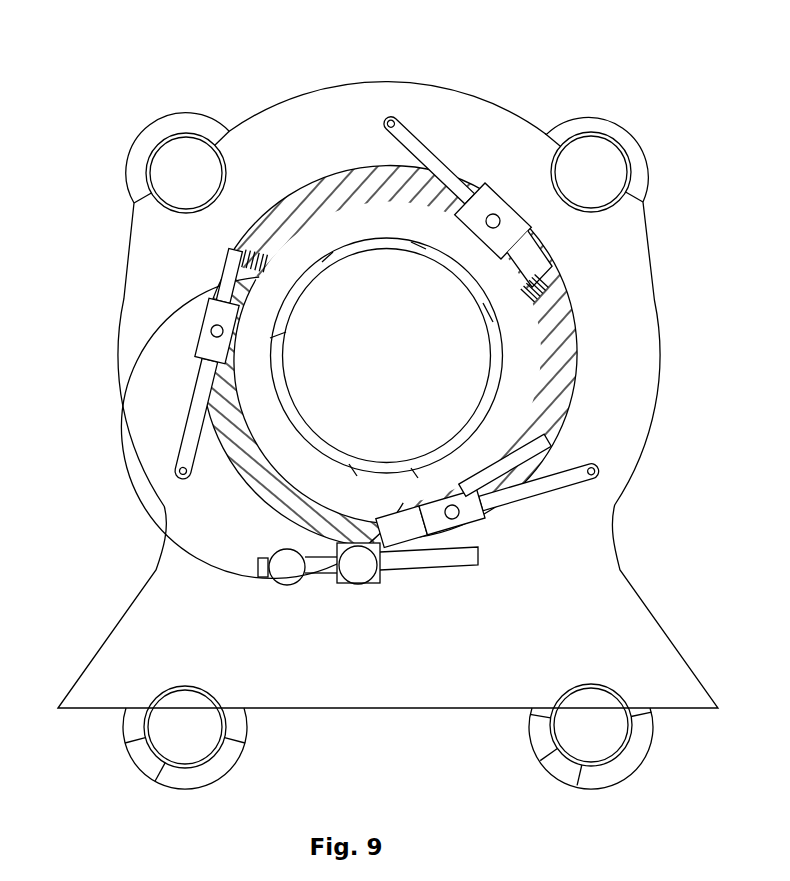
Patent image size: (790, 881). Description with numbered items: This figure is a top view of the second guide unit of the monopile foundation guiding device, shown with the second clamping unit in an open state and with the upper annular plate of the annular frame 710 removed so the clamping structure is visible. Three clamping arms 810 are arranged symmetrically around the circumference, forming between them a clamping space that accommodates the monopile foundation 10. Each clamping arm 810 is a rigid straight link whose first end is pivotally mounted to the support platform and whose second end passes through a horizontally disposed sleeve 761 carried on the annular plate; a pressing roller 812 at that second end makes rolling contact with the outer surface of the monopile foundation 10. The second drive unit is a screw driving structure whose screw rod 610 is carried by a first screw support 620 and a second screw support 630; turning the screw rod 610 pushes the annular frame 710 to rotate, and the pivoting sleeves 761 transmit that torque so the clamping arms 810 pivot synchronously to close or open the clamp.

The monopile foundation 10 is at (345, 250).
The annular frame 710 is at (577, 360).
The clamping arm 810 is at (423, 155).
The pressing roller 812 is at (548, 290).
The sleeve 761 is at (205, 347).
The screw rod 610 is at (453, 560).
The first screw support 620 is at (277, 576).
The second screw support 630 is at (355, 568).